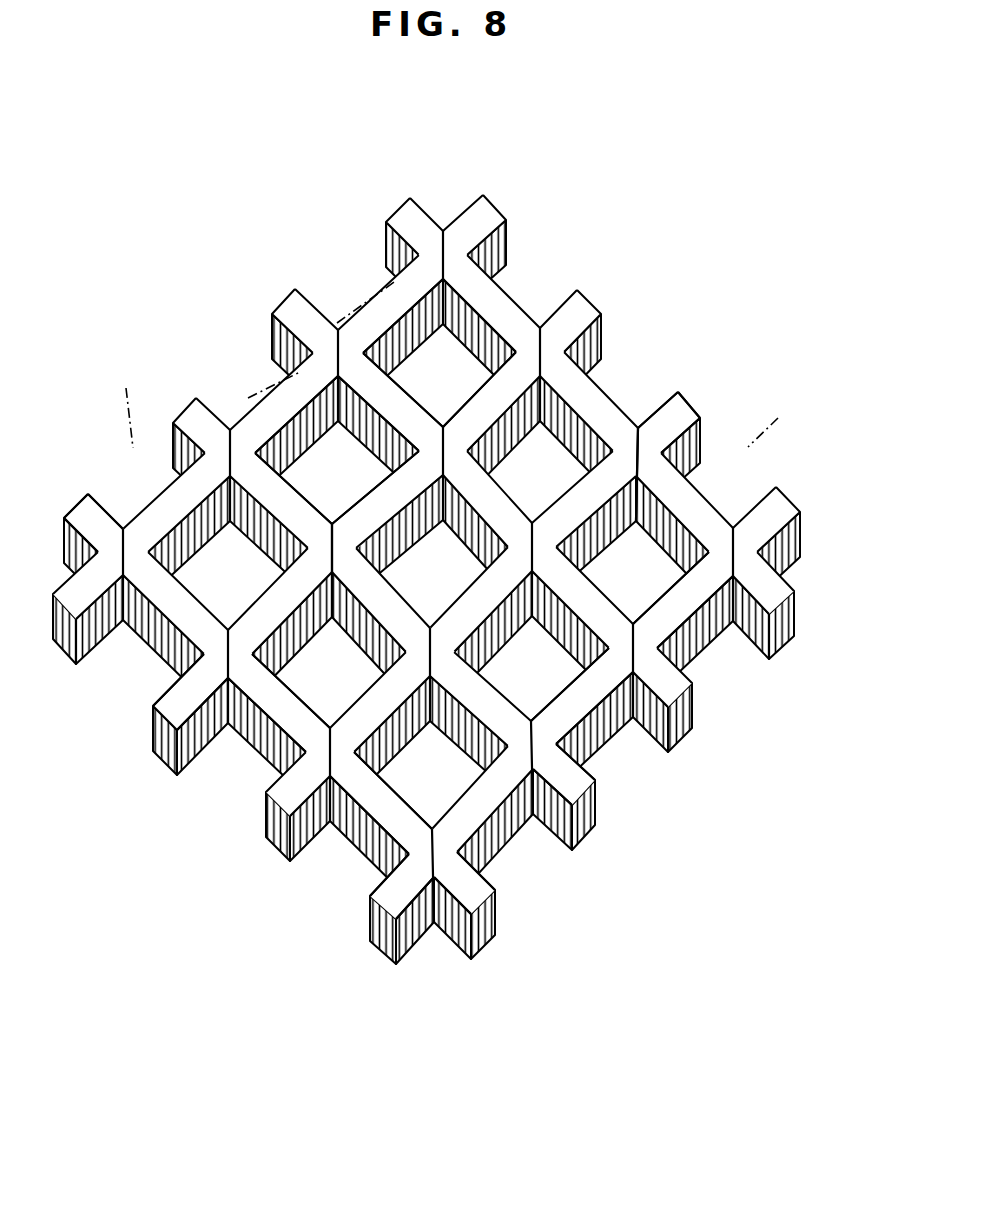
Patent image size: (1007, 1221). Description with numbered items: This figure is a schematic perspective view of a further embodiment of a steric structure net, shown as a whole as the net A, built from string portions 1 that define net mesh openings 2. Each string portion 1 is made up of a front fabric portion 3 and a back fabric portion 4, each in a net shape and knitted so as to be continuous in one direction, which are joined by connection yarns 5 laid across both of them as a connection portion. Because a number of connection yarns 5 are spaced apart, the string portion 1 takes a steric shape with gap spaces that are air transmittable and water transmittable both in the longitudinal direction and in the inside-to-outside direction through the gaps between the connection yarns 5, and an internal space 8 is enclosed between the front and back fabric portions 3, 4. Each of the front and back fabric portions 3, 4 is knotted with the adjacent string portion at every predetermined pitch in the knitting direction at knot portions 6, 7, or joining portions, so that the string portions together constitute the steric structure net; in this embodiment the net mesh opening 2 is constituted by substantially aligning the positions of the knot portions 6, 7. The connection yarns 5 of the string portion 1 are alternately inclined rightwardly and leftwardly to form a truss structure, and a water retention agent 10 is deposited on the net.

The lattice assembly A is at (583, 146).
The string portion 1 is at (163, 768).
The net mesh opening 2 is at (320, 463).
The front fabric portion 3 is at (583, 697).
The back fabric portion 4 is at (353, 847).
The connection yarns 5 is at (247, 737).
The knot portion 6 is at (93, 497).
The knot portion 7 is at (347, 588).
The internal space 8 is at (470, 928).
The water retention agent 10 is at (185, 553).